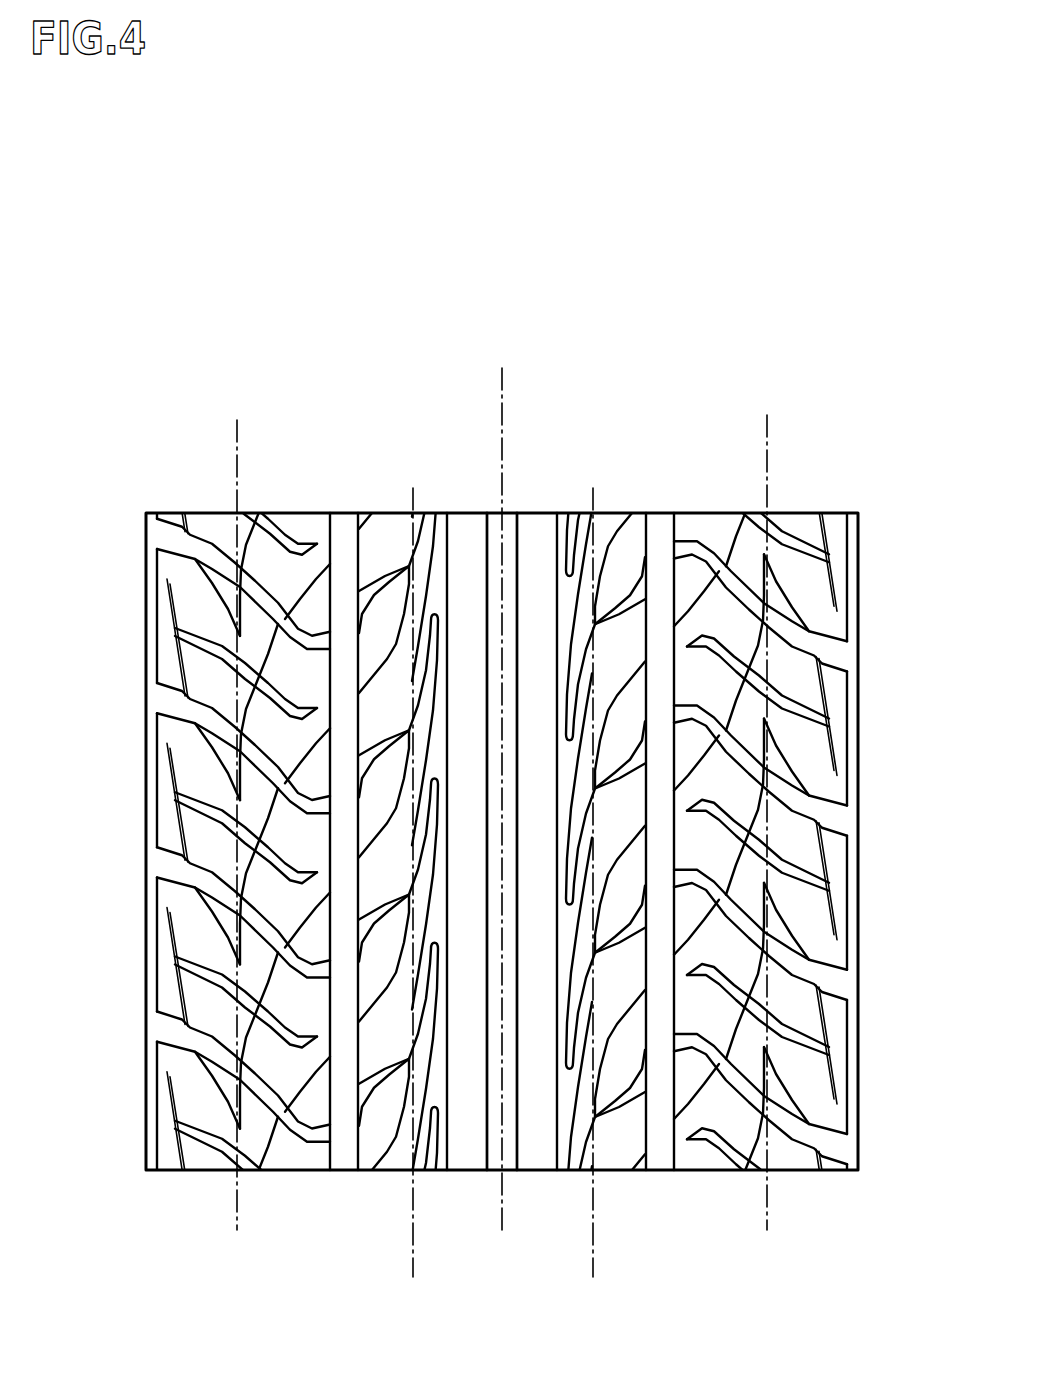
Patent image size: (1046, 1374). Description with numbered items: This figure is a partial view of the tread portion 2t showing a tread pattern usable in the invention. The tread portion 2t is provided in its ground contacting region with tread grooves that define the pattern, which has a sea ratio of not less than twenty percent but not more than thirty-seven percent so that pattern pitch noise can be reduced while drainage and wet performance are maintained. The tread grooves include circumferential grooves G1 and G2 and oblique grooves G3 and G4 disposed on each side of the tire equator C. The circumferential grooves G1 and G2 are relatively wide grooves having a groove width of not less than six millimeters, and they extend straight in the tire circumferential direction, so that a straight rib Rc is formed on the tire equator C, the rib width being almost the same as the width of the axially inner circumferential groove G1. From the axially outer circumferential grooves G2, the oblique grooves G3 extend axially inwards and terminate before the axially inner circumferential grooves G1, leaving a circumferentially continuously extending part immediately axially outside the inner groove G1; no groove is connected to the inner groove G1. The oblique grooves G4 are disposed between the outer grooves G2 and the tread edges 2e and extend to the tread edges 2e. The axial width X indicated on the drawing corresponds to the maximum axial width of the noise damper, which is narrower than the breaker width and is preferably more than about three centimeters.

The tread portion 2t is at (692, 363).
The tread edges 2e is at (504, 806).
The tire equator C is at (500, 784).
The straight rib Rc is at (507, 533).
The axially inner circumferential groove G1 is at (466, 535).
The axially outer circumferential groove G2 is at (342, 533).
The oblique grooves G3 is at (376, 1145).
The oblique grooves G4 is at (293, 1145).
The axial width X is at (576, 1274).